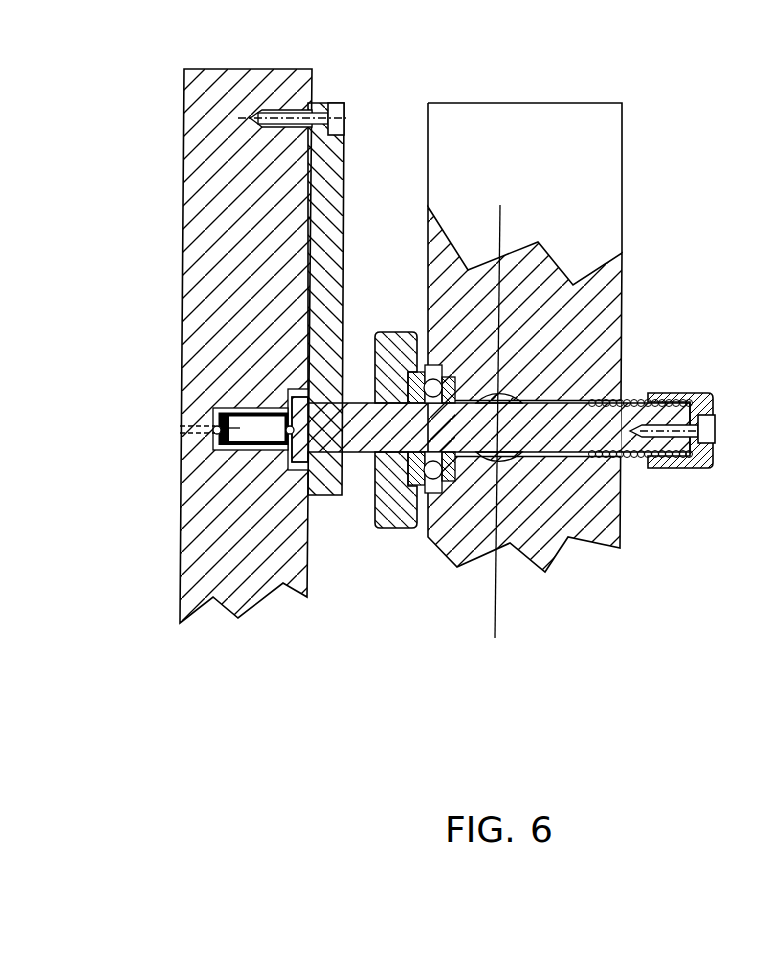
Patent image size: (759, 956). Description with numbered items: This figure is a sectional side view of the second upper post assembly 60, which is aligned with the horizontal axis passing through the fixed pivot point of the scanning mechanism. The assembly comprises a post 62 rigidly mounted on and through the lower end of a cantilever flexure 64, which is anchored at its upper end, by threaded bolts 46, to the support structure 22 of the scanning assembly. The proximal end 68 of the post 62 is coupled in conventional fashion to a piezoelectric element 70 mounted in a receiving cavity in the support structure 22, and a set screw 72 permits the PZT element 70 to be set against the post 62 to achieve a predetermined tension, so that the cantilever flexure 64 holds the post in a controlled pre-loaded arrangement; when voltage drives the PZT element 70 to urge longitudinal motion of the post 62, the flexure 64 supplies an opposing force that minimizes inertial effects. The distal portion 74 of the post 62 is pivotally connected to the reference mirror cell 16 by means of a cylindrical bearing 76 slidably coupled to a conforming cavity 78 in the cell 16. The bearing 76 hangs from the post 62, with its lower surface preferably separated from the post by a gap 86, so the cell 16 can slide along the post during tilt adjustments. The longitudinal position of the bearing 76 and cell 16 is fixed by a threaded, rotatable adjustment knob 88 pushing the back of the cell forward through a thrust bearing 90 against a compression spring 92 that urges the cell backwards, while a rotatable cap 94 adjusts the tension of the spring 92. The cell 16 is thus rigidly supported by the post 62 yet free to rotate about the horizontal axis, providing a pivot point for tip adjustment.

The cell 16 is at (548, 114).
The support structure 22 is at (272, 80).
The threaded bolts 46 is at (340, 118).
The post assembly 60 is at (380, 550).
The post 62 is at (360, 403).
The cantilever flexure 64 is at (343, 190).
The proximal end 68 is at (292, 455).
The piezoelectric element 70 is at (253, 430).
The set screw 72 is at (180, 430).
The distal portion 74 is at (540, 437).
The cylindrical bearing 76 is at (522, 402).
The conforming cavity 78 is at (504, 402).
The gap 86 is at (488, 473).
The adjustment knob 88 is at (375, 527).
The thrust bearing 90 is at (411, 376).
The compression spring 92 is at (633, 460).
The rotatable cap 94 is at (708, 393).